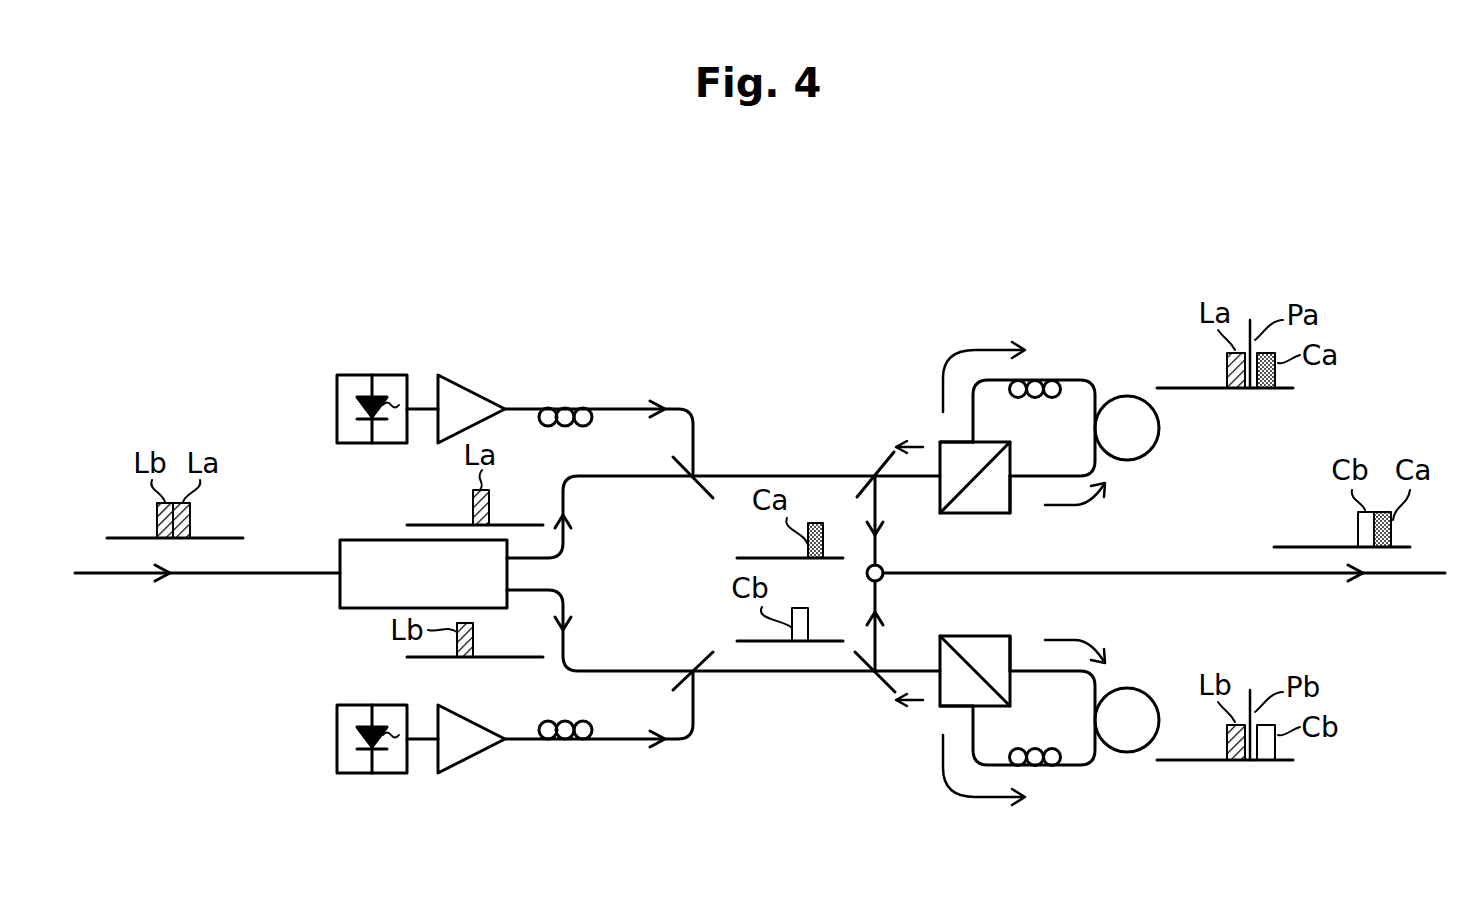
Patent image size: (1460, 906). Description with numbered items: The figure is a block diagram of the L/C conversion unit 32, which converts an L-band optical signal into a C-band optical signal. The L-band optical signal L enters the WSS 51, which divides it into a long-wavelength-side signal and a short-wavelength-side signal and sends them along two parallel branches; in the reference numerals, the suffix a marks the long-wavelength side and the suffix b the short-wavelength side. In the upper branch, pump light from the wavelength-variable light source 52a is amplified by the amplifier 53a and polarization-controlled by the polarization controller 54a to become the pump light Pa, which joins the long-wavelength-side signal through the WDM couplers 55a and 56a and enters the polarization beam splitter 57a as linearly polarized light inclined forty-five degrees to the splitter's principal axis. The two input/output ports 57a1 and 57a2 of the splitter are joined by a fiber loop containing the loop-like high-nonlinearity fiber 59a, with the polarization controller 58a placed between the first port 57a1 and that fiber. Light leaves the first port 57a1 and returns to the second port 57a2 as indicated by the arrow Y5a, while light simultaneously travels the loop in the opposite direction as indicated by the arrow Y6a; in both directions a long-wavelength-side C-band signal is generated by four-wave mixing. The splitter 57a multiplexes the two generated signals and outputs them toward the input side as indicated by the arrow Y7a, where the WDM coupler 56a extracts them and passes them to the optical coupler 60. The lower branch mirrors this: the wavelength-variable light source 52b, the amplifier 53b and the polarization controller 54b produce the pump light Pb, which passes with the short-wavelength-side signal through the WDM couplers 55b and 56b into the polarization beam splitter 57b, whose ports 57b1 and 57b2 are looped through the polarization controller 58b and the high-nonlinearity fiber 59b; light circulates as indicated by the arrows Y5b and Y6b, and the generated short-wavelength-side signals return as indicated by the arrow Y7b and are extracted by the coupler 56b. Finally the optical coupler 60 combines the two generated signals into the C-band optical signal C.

The L/C conversion unit 32 is at (1060, 293).
The WSS 51 is at (358, 540).
The wavelength-variable light source 52a is at (337, 398).
The wavelength-variable light source 52b is at (337, 750).
The amplifier 53a is at (472, 390).
The amplifier 53b is at (472, 757).
The polarization controller 54a is at (567, 427).
The polarization controller 54b is at (577, 722).
The WDM coupler 55a is at (687, 490).
The WDM coupler 55b is at (687, 655).
The WDM coupler 56a is at (865, 468).
The WDM coupler 56b is at (862, 680).
The polarization beam splitter 57a is at (973, 513).
The first input/output port 57a1 is at (970, 438).
The second input/output port 57a2 is at (1013, 480).
The polarization beam splitter 57b is at (970, 636).
The first input/output port 57b1 is at (967, 712).
The second input/output port 57b2 is at (1008, 660).
The polarization controller 58a is at (1035, 392).
The polarization controller 58b is at (1033, 750).
The loop-like high-nonlinearity fiber 59a is at (1112, 395).
The loop-like high-nonlinearity fiber 59b is at (1112, 752).
The optical coupler 60 is at (880, 565).
The arrow Y5a is at (978, 348).
The arrow Y5b is at (978, 800).
The arrow Y6a is at (1080, 505).
The arrow Y6b is at (1080, 640).
The arrow Y7a is at (920, 445).
The arrow Y7b is at (920, 702).
The optical signal L is at (145, 537).
The C-band optical signal C is at (1310, 545).
The pump light Pa is at (633, 407).
The pump light Pb is at (633, 742).